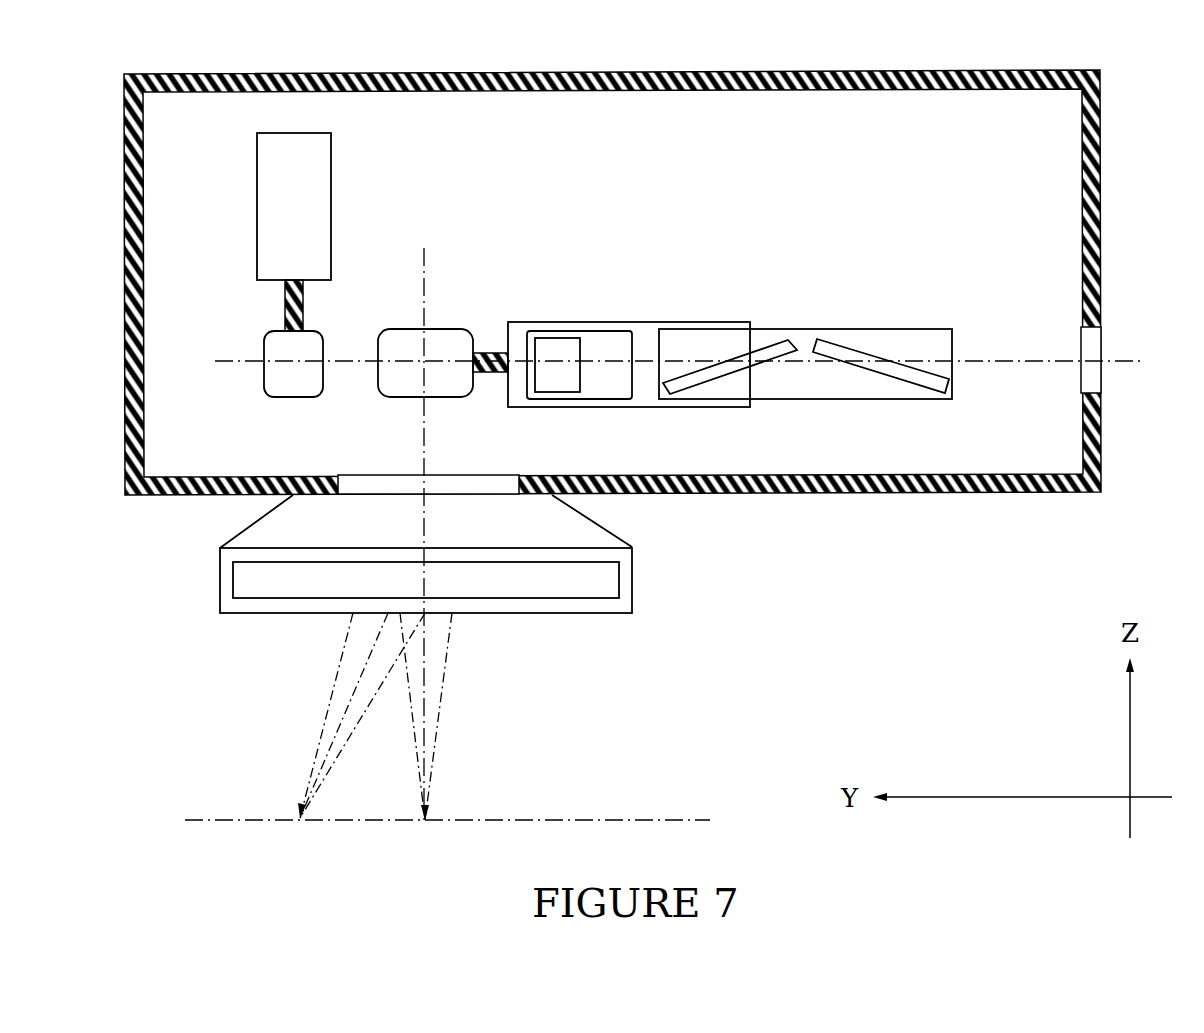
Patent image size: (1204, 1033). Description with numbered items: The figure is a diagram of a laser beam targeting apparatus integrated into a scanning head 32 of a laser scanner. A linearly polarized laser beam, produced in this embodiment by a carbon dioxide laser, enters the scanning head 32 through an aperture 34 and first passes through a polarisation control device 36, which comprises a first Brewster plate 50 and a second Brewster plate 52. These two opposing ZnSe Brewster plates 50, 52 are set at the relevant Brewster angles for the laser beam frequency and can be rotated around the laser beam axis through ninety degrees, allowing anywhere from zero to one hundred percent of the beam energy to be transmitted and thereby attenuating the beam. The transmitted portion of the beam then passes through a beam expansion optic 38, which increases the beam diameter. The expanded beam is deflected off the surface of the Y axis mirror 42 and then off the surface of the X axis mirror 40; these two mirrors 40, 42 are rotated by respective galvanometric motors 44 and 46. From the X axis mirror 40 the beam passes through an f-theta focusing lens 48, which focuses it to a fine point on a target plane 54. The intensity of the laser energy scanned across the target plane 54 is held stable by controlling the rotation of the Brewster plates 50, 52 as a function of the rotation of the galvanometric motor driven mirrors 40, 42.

The scanning head 32 is at (1103, 123).
The aperture 34 is at (1080, 347).
The polarisation control device 36 is at (808, 330).
The beam expansion optic 38 is at (557, 337).
The X axis mirror 40 is at (443, 328).
The Y axis mirror 42 is at (295, 398).
The galvanometric motor 44 is at (333, 173).
The galvanometric motor 46 is at (629, 322).
The f-theta focusing lens 48 is at (576, 598).
The first Brewster plate 50 is at (850, 345).
The second Brewster plate 52 is at (766, 348).
The target plane 54 is at (207, 820).